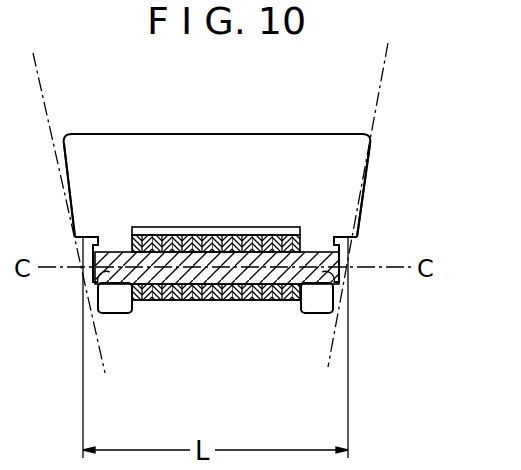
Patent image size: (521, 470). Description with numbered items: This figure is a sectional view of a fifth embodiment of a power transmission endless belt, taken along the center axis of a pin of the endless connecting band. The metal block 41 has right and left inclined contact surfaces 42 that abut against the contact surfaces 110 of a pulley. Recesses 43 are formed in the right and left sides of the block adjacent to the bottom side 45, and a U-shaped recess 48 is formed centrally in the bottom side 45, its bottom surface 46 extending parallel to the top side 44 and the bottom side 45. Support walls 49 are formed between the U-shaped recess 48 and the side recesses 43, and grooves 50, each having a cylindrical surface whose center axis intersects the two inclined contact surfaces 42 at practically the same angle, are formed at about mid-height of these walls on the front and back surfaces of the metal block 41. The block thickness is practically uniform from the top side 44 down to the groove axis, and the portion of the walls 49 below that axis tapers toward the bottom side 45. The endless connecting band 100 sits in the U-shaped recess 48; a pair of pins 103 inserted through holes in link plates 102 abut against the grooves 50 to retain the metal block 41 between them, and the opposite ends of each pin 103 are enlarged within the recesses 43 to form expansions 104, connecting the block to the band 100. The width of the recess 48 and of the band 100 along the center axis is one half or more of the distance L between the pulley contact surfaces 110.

The contact surfaces of a pulley 110 is at (50, 98).
The metal block 41 is at (214, 132).
The top side 44 is at (273, 132).
The inclined contact surfaces 42 is at (58, 166).
The recesses 43 is at (92, 244).
The expansions 104 is at (341, 289).
The grooves 50 is at (326, 256).
The support walls 49 is at (117, 306).
The bottom side 45 is at (310, 314).
The bottom surface 46 is at (228, 230).
The link plates 102 is at (166, 233).
The pins 103 is at (224, 278).
The endless connecting band 100 is at (248, 306).
The U-shaped recess 48 is at (294, 310).